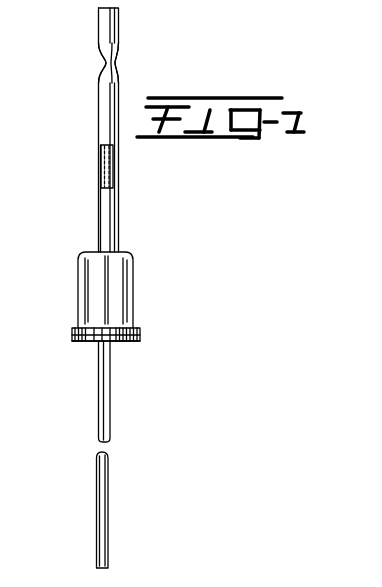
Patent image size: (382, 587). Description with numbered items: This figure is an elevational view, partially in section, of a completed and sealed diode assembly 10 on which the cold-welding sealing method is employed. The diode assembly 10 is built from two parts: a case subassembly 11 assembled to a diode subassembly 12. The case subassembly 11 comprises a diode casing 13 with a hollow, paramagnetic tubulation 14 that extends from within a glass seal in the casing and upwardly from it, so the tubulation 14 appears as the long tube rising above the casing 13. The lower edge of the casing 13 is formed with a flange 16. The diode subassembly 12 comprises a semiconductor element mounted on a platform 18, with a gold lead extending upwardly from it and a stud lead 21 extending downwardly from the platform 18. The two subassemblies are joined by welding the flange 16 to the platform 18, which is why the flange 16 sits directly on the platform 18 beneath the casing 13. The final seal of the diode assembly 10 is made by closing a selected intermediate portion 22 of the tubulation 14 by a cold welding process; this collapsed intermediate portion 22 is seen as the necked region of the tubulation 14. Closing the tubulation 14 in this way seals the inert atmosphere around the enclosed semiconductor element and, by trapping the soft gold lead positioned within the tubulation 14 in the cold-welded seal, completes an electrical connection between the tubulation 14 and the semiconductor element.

The diode assembly 10 is at (48, 293).
The case subassembly 11 is at (123, 200).
The diode subassembly 12 is at (118, 427).
The diode casing 13 is at (133, 276).
The tubulation 14 is at (99, 97).
The flange 16 is at (137, 328).
The platform 18 is at (131, 341).
The stud lead 21 is at (108, 518).
The intermediate portion 22 is at (117, 63).